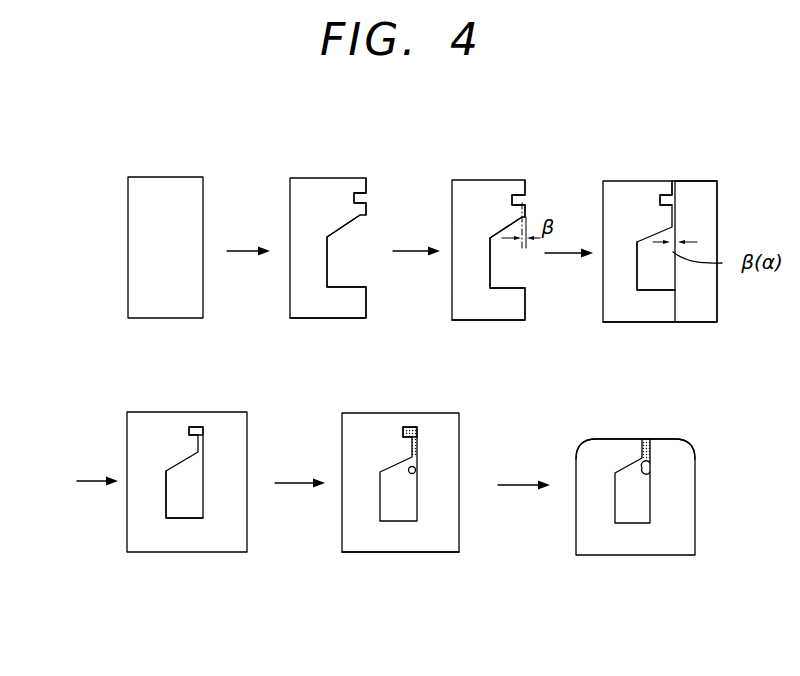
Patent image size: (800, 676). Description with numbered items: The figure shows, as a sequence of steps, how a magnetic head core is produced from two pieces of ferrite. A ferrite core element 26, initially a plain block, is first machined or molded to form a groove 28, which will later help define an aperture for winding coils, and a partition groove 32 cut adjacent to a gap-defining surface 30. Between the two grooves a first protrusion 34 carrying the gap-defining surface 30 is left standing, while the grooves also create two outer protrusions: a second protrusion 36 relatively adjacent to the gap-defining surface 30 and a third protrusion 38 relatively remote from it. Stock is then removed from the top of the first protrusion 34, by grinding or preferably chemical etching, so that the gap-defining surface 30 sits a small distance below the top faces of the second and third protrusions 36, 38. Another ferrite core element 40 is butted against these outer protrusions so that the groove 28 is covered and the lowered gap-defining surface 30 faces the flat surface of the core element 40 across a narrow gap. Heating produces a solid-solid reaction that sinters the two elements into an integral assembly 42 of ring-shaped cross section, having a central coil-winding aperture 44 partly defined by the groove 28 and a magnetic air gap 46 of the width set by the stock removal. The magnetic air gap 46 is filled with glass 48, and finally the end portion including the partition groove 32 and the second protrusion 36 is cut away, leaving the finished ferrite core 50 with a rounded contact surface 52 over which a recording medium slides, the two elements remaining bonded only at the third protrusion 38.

The ferrite core element 26 is at (121, 181).
The groove 28 is at (350, 287).
The gap-defining surface 30 is at (368, 206).
The partition groove 32 is at (362, 197).
The first protrusion 34 is at (357, 218).
The second protrusion 36 is at (354, 183).
The third protrusion 38 is at (342, 312).
The ferrite core element 40 is at (711, 178).
The integral assembly 42 is at (121, 443).
The coil-winding aperture 44 is at (194, 488).
The magnetic air gap 46 is at (199, 427).
The glass 48 is at (417, 472).
The ferrite core 50 is at (711, 523).
The rounded top portion 52 is at (625, 437).